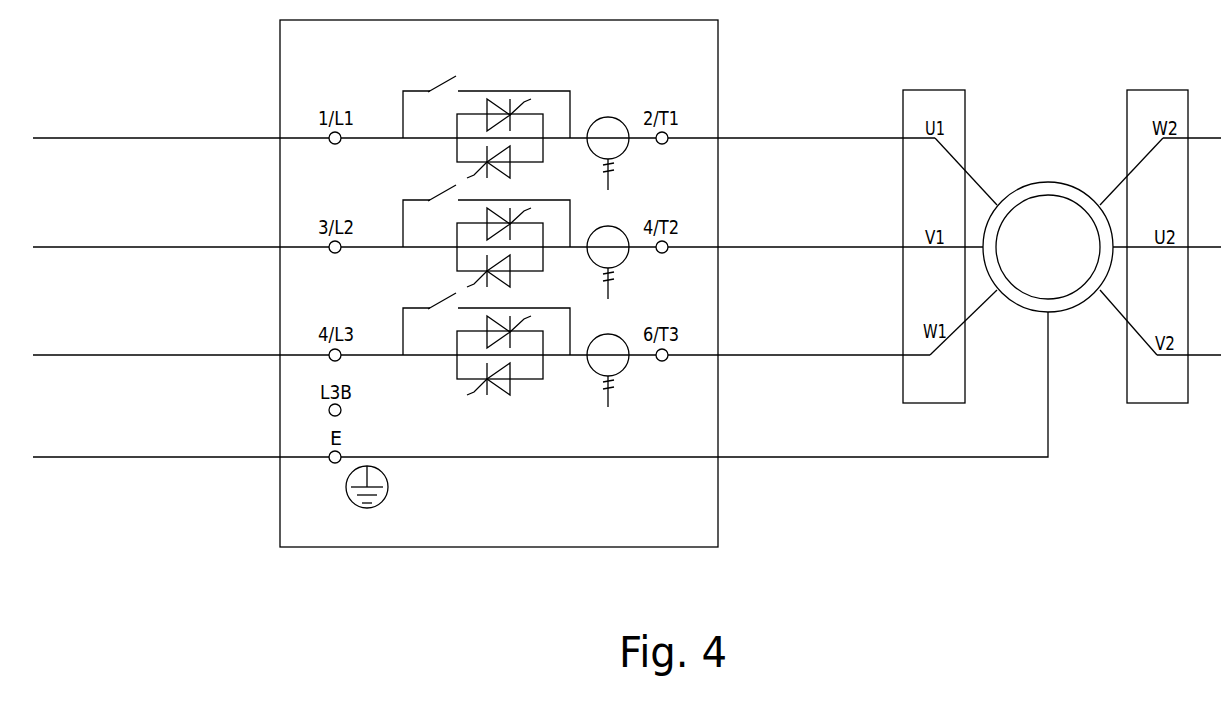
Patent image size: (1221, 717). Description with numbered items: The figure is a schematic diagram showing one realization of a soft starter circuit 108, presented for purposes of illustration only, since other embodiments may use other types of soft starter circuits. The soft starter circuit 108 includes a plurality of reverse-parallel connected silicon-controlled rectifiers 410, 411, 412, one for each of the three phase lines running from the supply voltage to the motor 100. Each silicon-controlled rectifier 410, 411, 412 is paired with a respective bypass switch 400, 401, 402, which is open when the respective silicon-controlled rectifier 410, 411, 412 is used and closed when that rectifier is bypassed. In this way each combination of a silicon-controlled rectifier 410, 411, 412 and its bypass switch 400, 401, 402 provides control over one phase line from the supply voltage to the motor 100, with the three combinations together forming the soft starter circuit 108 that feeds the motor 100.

The motor 100 is at (1080, 306).
The soft starter circuit 108 is at (718, 83).
The bypass switch 400 is at (438, 86).
The bypass switch 401 is at (438, 195).
The bypass switch 402 is at (438, 303).
The silicon-controlled rectifier 410 is at (525, 162).
The silicon-controlled rectifier 411 is at (525, 271).
The silicon-controlled rectifier 412 is at (525, 379).